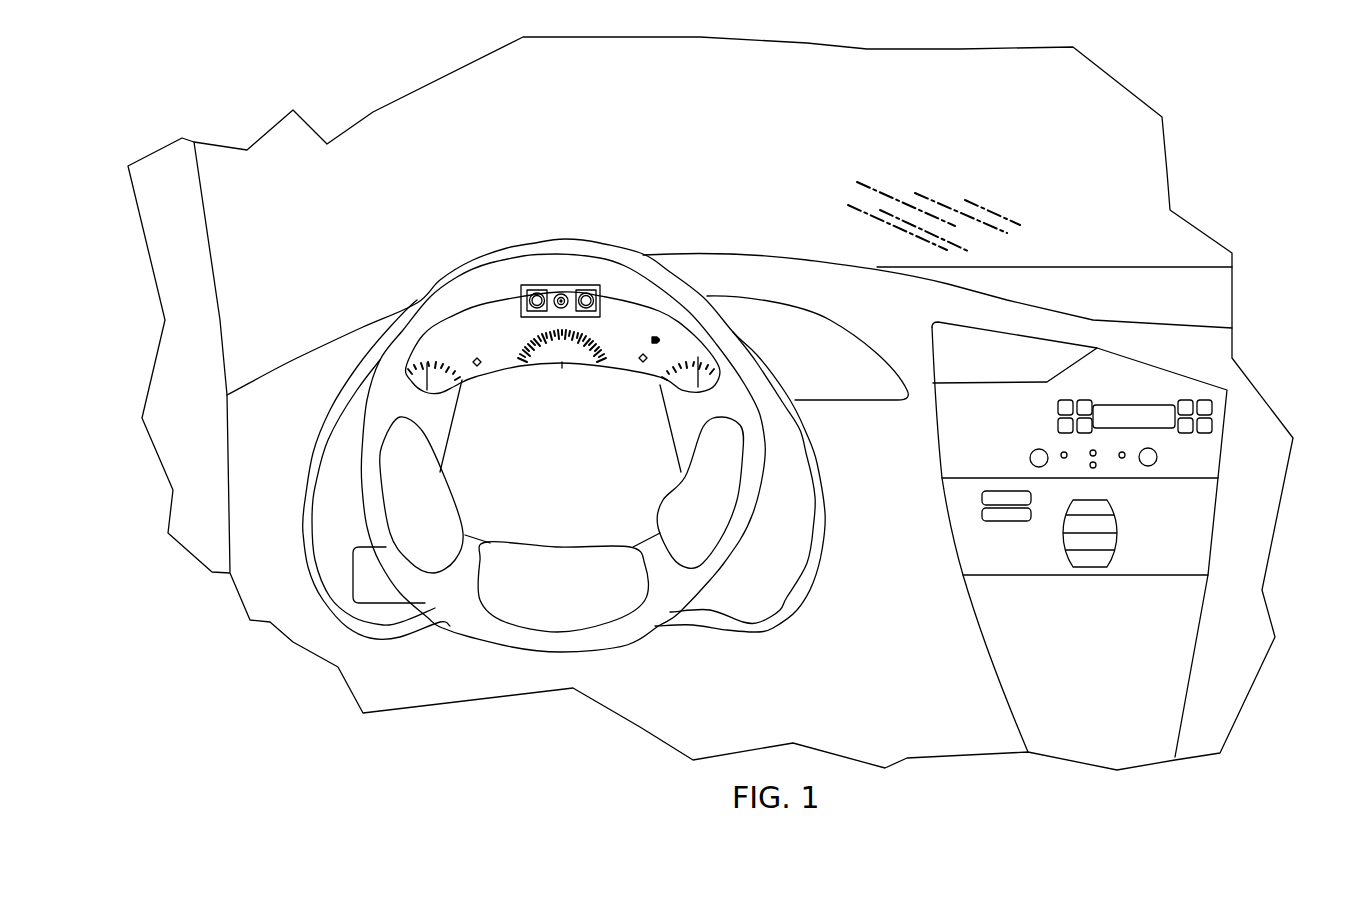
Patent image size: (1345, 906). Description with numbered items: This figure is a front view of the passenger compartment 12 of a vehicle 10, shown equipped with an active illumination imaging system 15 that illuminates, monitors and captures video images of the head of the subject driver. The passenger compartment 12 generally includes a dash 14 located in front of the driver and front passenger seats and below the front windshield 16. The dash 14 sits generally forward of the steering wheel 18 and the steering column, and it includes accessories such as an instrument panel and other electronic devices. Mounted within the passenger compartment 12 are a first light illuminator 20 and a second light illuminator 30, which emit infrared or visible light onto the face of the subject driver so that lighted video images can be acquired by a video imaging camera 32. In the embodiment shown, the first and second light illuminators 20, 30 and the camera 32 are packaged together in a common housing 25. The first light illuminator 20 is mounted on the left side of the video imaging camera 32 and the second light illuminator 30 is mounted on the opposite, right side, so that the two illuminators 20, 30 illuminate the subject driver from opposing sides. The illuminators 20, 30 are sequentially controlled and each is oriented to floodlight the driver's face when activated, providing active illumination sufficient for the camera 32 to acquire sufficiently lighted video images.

The vehicle 10 is at (1250, 52).
The passenger compartment 12 is at (900, 744).
The dash 14 is at (722, 266).
The illumination imaging system 15 is at (500, 297).
The front windshield 16 is at (1113, 128).
The steering wheel 18 is at (598, 243).
The first light illuminator 20 is at (571, 259).
The common housing 25 is at (541, 288).
The second light illuminator 30 is at (586, 289).
The video imaging camera 32 is at (562, 293).